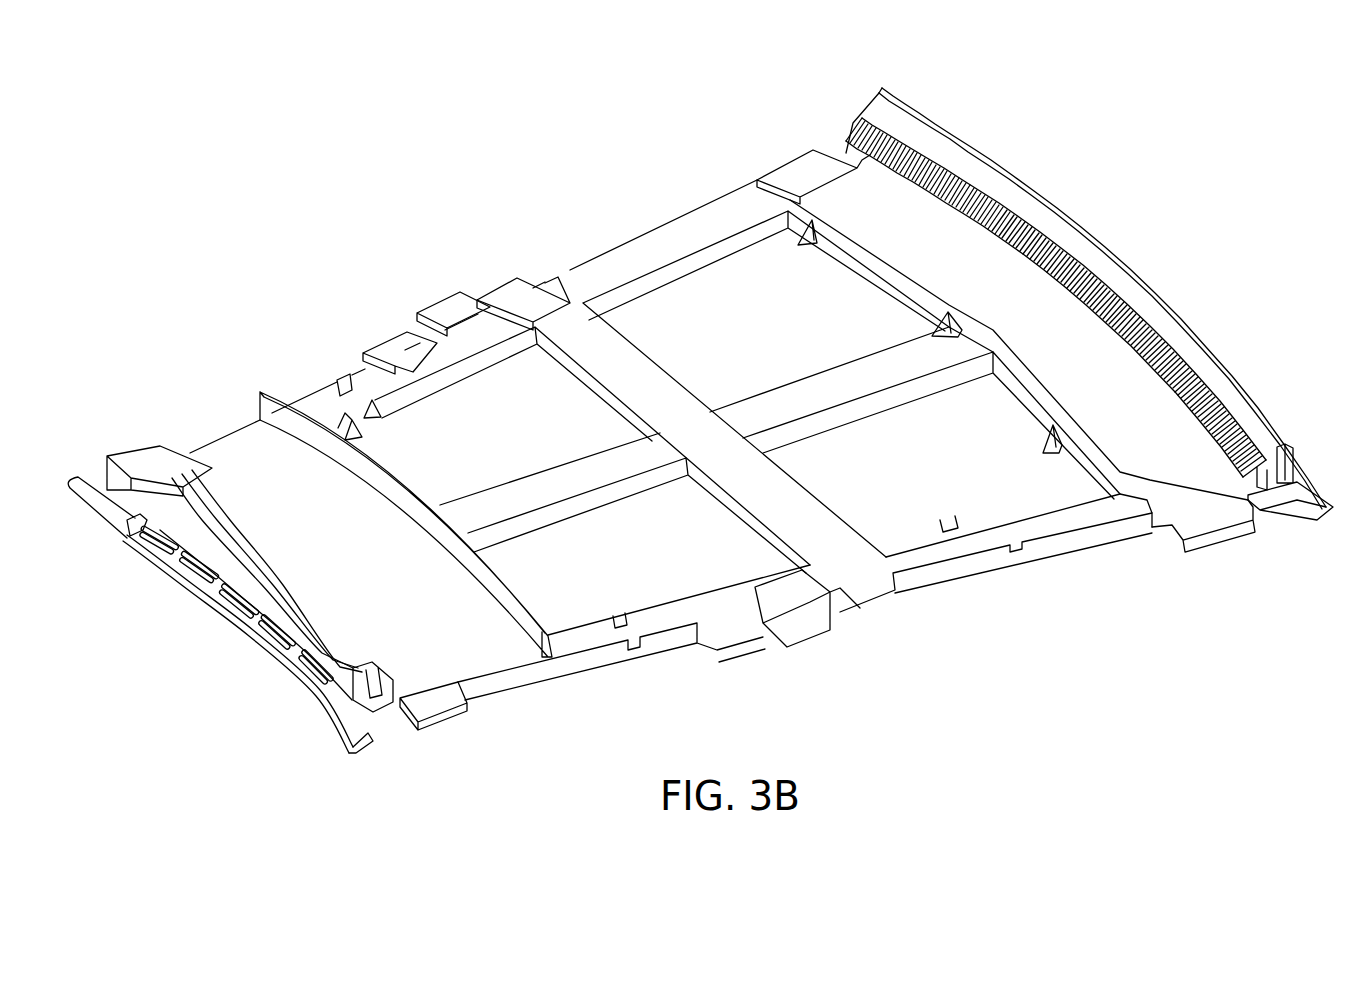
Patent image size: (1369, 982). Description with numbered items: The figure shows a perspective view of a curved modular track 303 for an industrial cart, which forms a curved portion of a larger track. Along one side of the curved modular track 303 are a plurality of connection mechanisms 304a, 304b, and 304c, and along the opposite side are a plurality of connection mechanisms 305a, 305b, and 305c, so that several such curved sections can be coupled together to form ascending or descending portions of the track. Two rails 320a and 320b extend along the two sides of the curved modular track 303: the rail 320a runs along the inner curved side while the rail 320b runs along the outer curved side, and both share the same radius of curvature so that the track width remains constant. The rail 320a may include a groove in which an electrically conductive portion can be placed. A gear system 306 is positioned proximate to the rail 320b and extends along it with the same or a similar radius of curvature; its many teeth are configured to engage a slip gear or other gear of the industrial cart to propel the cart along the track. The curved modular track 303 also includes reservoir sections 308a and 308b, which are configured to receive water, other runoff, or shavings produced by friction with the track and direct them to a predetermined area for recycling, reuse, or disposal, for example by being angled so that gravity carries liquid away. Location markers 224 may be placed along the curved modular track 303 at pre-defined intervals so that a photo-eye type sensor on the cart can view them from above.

The curved modular track 303 is at (152, 88).
The connection mechanism 304a is at (168, 443).
The connection mechanism 304b is at (530, 273).
The connection mechanism 304c is at (820, 142).
The location marker 224 is at (768, 202).
The reservoir section 308a is at (381, 562).
The reservoir section 308b is at (976, 259).
The gear system 306 is at (1082, 326).
The connection mechanism 305a is at (458, 738).
The connection mechanism 305b is at (812, 658).
The connection mechanism 305c is at (1207, 545).
The rail 320a is at (390, 732).
The rail 320b is at (1283, 512).